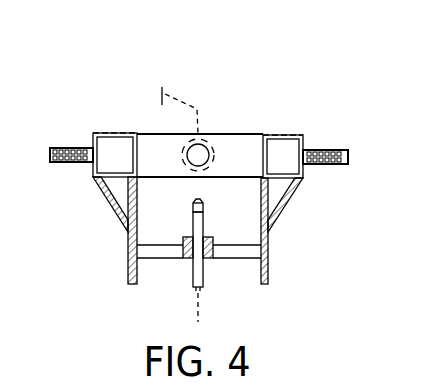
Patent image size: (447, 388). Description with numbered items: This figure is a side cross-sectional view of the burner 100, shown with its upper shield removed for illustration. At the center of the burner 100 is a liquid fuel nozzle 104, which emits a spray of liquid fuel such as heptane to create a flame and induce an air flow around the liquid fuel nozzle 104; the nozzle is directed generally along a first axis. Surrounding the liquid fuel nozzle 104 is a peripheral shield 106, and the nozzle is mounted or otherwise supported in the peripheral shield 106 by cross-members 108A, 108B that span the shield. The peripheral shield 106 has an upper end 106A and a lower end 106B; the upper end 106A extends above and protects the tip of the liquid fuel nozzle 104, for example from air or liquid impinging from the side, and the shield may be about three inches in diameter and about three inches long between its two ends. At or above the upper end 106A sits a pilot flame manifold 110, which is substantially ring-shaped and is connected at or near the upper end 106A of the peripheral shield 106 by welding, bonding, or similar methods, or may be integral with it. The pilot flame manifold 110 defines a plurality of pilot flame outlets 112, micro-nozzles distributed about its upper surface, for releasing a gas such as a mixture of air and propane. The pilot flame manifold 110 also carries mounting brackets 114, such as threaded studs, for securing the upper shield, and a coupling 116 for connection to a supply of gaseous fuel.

The burner 100 is at (341, 62).
The liquid fuel nozzle 104 is at (200, 223).
The peripheral shield 106 is at (130, 247).
The upper end 106A is at (270, 183).
The lower end 106B is at (266, 284).
The cross-member 108A is at (162, 256).
The cross-member 108B is at (237, 257).
The pilot flame manifold 110 is at (305, 133).
The pilot flame outlets 112 is at (110, 132).
The mounting brackets 114 is at (75, 161).
The coupling 116 is at (209, 151).